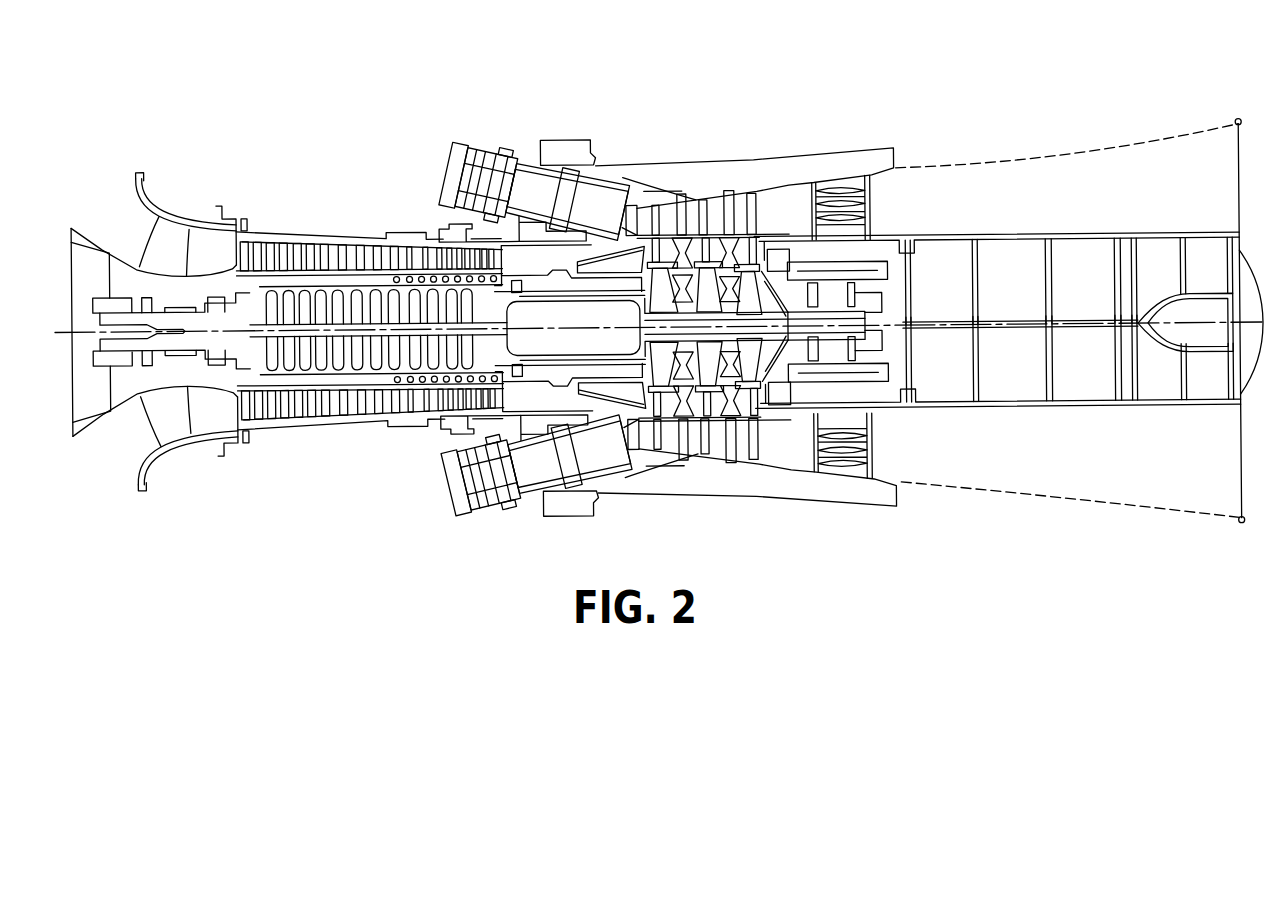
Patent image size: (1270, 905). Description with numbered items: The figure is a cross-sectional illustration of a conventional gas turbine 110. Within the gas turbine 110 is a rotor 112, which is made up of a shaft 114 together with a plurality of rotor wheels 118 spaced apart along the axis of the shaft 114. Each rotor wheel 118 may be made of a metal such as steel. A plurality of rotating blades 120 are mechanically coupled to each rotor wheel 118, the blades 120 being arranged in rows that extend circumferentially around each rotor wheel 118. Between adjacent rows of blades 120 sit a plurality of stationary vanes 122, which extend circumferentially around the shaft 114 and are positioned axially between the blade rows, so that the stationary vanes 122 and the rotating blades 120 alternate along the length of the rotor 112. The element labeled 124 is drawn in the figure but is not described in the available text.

The gas turbine 110 is at (659, 300).
The rotor 112 is at (746, 300).
The shaft 114 is at (830, 307).
The rotor wheel 118 is at (750, 256).
The rotating blades 120 is at (748, 232).
The stationary vanes 122 is at (688, 217).
The combustor 124 is at (526, 158).